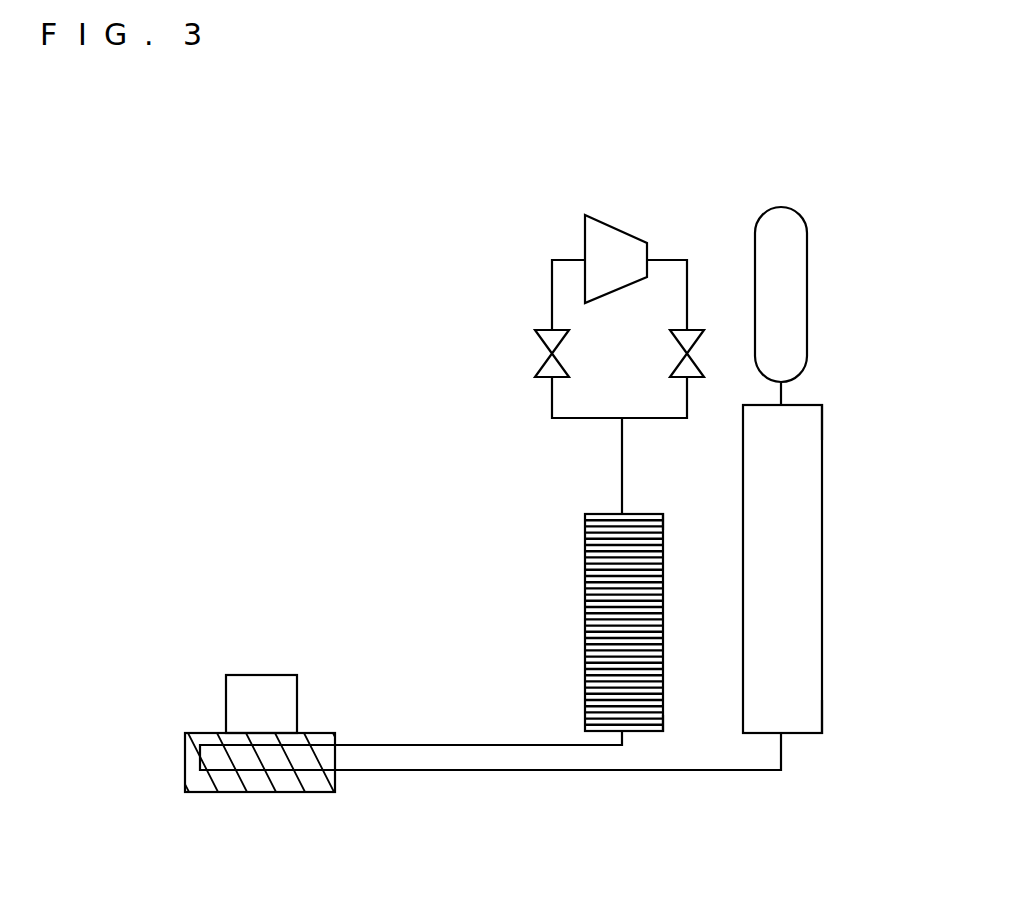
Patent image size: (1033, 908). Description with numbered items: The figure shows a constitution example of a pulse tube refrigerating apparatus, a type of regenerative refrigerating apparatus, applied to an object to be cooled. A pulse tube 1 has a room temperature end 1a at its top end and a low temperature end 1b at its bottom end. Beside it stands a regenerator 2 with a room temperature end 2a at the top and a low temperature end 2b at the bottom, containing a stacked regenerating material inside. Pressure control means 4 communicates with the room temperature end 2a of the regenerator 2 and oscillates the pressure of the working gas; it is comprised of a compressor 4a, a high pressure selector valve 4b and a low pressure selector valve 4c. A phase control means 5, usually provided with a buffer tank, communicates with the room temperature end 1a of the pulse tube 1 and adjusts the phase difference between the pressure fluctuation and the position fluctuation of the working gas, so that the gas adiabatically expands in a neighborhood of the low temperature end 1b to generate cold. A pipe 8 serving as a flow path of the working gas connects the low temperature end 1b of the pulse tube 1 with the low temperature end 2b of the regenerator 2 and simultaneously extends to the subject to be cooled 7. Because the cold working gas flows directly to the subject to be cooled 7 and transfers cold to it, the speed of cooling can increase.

The pulse tube 1 is at (805, 551).
The room temperature end of the pulse tube 1a is at (808, 424).
The low temperature end of the pulse tube 1b is at (805, 722).
The regenerator 2 is at (590, 624).
The room temperature end of the regenerator 2a is at (590, 524).
The low temperature end of the regenerator 2b is at (590, 722).
The pressure control means 4 is at (541, 253).
The compressor 4a is at (627, 250).
The high pressure selector valve 4b is at (691, 334).
The low pressure selector valve 4c is at (548, 342).
The phase control means 5 is at (788, 284).
The subject to be cooled 7 is at (265, 687).
The pipe 8 is at (575, 772).